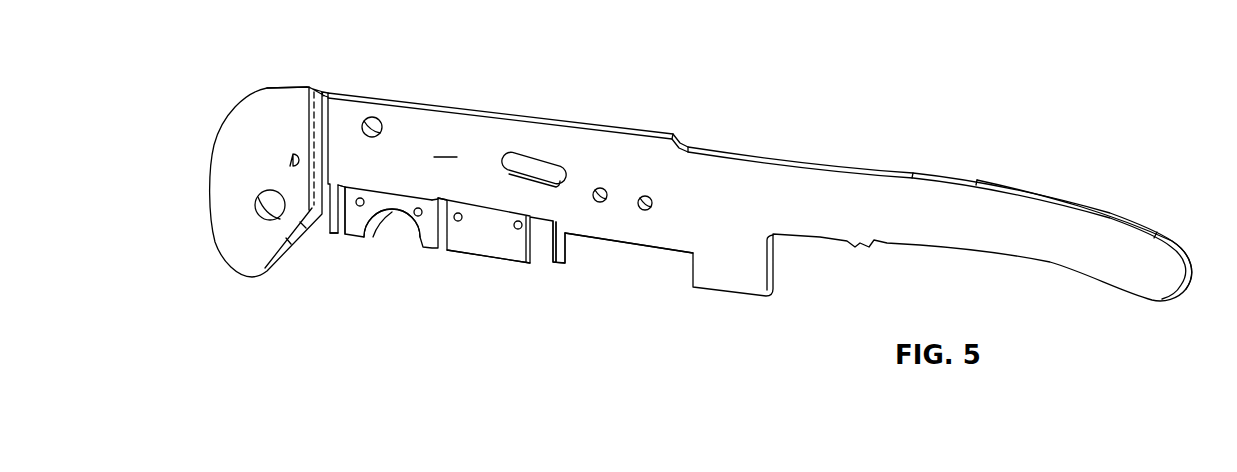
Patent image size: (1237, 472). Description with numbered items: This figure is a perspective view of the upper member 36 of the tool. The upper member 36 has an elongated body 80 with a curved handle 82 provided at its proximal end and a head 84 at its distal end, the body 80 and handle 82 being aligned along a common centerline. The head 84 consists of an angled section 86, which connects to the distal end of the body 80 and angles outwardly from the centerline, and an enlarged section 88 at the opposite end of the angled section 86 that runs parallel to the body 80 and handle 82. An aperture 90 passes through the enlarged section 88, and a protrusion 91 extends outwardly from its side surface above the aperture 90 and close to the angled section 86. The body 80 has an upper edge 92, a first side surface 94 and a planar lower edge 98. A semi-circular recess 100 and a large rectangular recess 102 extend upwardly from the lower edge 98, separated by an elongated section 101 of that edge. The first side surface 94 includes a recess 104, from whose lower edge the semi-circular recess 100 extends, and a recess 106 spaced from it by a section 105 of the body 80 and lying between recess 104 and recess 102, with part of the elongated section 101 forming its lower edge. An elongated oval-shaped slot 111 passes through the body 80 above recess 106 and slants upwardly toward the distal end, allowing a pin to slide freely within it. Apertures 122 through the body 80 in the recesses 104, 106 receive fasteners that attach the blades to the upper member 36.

The upper member 36 is at (736, 112).
The body 80 is at (760, 190).
The curved handle 82 is at (985, 205).
The head 84 is at (279, 104).
The angled section 86 is at (318, 86).
The enlarged section 88 is at (255, 255).
The aperture 90 is at (258, 205).
The protrusion 91 is at (293, 158).
The upper edge 92 is at (470, 104).
The first side surface 94 is at (444, 146).
The planar lower edge 98 is at (543, 265).
The semi-circular recess 100 is at (383, 210).
The elongated section 101 is at (484, 267).
The rectangular recess 102 is at (623, 245).
The recess 104 is at (393, 185).
The section 105 is at (432, 248).
The recess 106 is at (478, 233).
The oval-shaped slot 111 is at (528, 150).
The apertures 122 is at (360, 208).